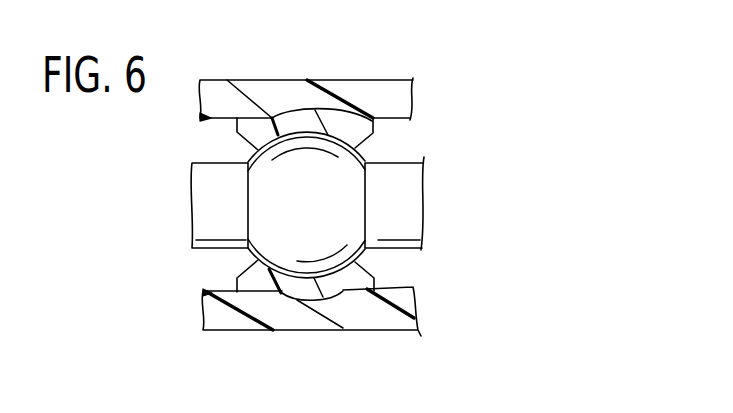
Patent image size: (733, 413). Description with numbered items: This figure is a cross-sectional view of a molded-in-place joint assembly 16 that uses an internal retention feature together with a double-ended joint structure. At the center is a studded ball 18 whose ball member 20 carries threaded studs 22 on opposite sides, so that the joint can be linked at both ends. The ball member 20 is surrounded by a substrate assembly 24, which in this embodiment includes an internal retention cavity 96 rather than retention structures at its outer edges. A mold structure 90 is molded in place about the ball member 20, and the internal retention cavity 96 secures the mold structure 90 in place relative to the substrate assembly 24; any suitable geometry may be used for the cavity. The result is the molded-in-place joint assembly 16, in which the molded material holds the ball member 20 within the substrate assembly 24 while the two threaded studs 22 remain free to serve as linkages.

The molded-in-place joint assembly 16 is at (401, 207).
The studded ball 18 is at (492, 81).
The ball member 20 is at (318, 213).
The threaded stud 22 is at (193, 197).
The substrate assembly 24 is at (248, 79).
The mold structure 90 is at (345, 125).
The internal retention cavity 96 is at (295, 112).